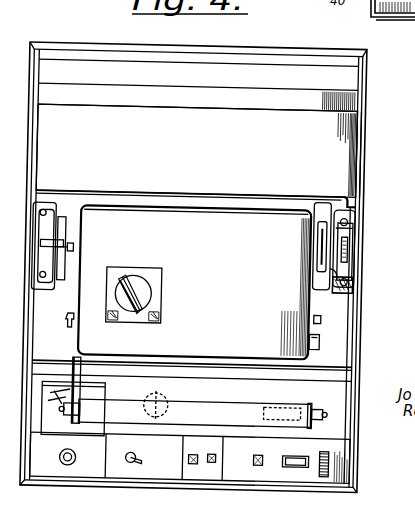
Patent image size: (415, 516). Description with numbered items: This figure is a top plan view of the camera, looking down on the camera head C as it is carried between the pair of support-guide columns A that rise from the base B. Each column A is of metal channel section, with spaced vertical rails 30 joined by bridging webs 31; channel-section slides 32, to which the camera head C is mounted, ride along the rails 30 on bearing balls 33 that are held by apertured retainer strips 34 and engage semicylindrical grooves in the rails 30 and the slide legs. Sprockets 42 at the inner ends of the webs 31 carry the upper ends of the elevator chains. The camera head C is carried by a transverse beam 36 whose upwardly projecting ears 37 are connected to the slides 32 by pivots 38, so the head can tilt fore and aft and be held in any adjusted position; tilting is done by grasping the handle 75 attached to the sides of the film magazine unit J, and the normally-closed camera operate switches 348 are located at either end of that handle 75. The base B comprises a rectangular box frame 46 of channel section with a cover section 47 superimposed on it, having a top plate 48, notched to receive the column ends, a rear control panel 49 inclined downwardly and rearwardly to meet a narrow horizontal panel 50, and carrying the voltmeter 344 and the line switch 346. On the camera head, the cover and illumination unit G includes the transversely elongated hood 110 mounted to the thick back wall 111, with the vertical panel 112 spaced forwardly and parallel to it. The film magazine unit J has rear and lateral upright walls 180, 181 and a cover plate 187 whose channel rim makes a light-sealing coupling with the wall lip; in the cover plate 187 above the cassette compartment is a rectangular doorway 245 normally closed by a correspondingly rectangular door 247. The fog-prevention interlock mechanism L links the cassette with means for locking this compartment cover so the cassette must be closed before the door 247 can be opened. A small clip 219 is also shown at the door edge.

The support-guide columns A is at (374, 213).
The base B is at (377, 74).
The camera head C is at (360, 148).
The cover and illumination unit G is at (196, 150).
The film magazine unit J is at (326, 342).
The fog-prevention interlock mechanism L is at (153, 260).
The vertical rails 30 is at (356, 191).
The bridging webs 31 is at (362, 244).
The slides 32 is at (357, 226).
The bearing balls 33 is at (358, 268).
The apertured retainer strips 34 is at (360, 280).
The transverse beam 36 is at (326, 280).
The ears 37 is at (330, 258).
The pivots 38 is at (320, 246).
The sprockets 42 is at (347, 231).
The rectangular box frame 46 is at (372, 104).
The cover section 47 is at (364, 340).
The top plate 48 is at (199, 74).
The rear control panel 49 is at (351, 403).
The narrow horizontal panel 50 is at (348, 456).
The handle 75 is at (191, 393).
The hood 110 is at (363, 156).
The back wall 111 is at (217, 199).
The vertical panel 112 is at (370, 120).
The rear upright wall 180 is at (232, 364).
The lateral upright wall 181 is at (79, 297).
The cover plate 187 is at (195, 282).
The hinge clip 219 is at (76, 316).
The rectangular doorway 245 is at (195, 258).
The door 247 is at (179, 287).
The voltmeter 344 is at (97, 427).
The line switch 346 is at (150, 459).
The camera operate switches 348 is at (80, 409).